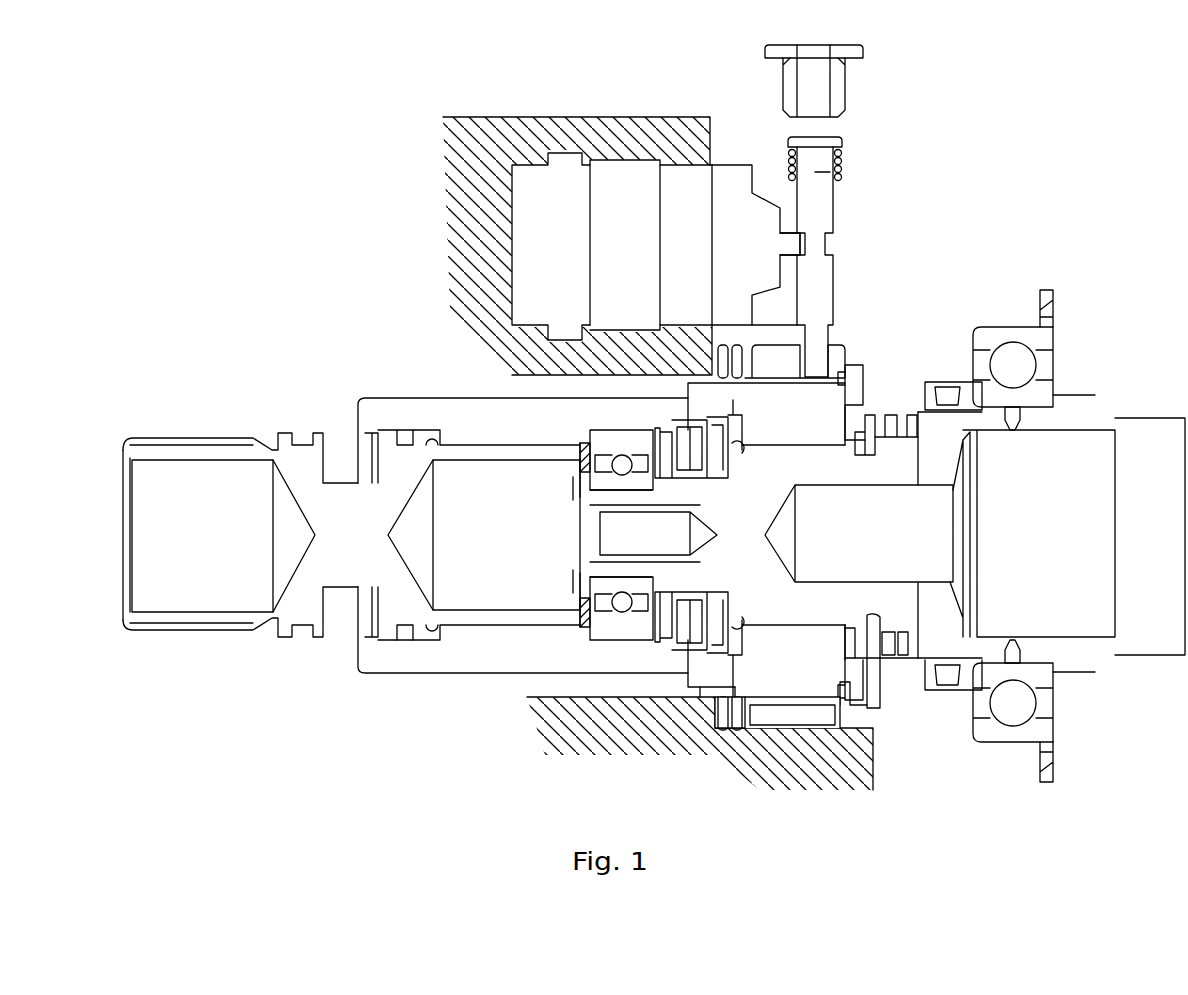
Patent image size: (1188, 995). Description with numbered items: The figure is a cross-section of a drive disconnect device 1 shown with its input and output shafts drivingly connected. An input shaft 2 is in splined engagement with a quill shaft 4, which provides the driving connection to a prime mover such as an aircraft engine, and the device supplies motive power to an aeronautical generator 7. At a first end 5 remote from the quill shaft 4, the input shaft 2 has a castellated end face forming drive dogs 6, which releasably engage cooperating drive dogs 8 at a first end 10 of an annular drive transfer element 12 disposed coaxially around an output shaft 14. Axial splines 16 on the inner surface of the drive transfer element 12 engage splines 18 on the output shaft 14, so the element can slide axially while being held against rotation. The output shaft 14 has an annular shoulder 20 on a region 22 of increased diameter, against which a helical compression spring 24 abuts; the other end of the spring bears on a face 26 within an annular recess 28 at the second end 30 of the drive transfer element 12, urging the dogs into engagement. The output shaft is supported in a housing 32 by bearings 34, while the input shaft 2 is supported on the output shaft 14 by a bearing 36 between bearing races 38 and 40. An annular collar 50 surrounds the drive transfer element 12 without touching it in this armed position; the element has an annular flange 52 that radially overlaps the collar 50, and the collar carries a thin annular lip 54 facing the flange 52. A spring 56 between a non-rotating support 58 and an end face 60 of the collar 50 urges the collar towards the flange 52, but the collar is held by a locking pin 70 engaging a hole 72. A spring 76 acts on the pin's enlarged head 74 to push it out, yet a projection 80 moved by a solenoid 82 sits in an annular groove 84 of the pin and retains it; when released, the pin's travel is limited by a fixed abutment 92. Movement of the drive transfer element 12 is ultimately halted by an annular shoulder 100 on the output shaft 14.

The drive disconnect device 1 is at (272, 350).
The input shaft 2 is at (398, 412).
The quill shaft 4 is at (210, 622).
The first end 5 is at (705, 680).
The drive dogs 6 is at (720, 408).
The aeronautical generator 7 is at (1145, 420).
The drive dogs 8 is at (730, 412).
The first end 10 is at (740, 700).
The drive transfer element 12 is at (783, 440).
The output shaft 14 is at (800, 612).
The axial splines 16 is at (790, 455).
The splines 18 is at (850, 612).
The annular shoulder 20 is at (920, 422).
The region of increased diameter 22 is at (955, 650).
The helical compression spring 24 is at (900, 700).
The face 26 is at (875, 428).
The annular recess 28 is at (898, 395).
The second end 30 is at (880, 672).
The housing 32 is at (1046, 290).
The bearings 34 is at (1030, 368).
The bearing 36 is at (620, 608).
The bearing race 38 is at (628, 622).
The bearing race 40 is at (580, 585).
The annular collar 50 is at (818, 740).
The annular flange 52 is at (848, 368).
The annular lip 54 is at (855, 365).
The spring 56 is at (735, 730).
The non-rotating support 58 is at (712, 345).
The end face 60 is at (730, 345).
The locking pin 70 is at (843, 165).
The hole 72 is at (790, 348).
The enlarged head 74 is at (785, 150).
The spring 76 is at (842, 178).
The projection 80 is at (775, 245).
The solenoid 82 is at (690, 175).
The annular groove 84 is at (838, 250).
The fixed abutment 92 is at (862, 50).
The annular shoulder 100 is at (892, 432).